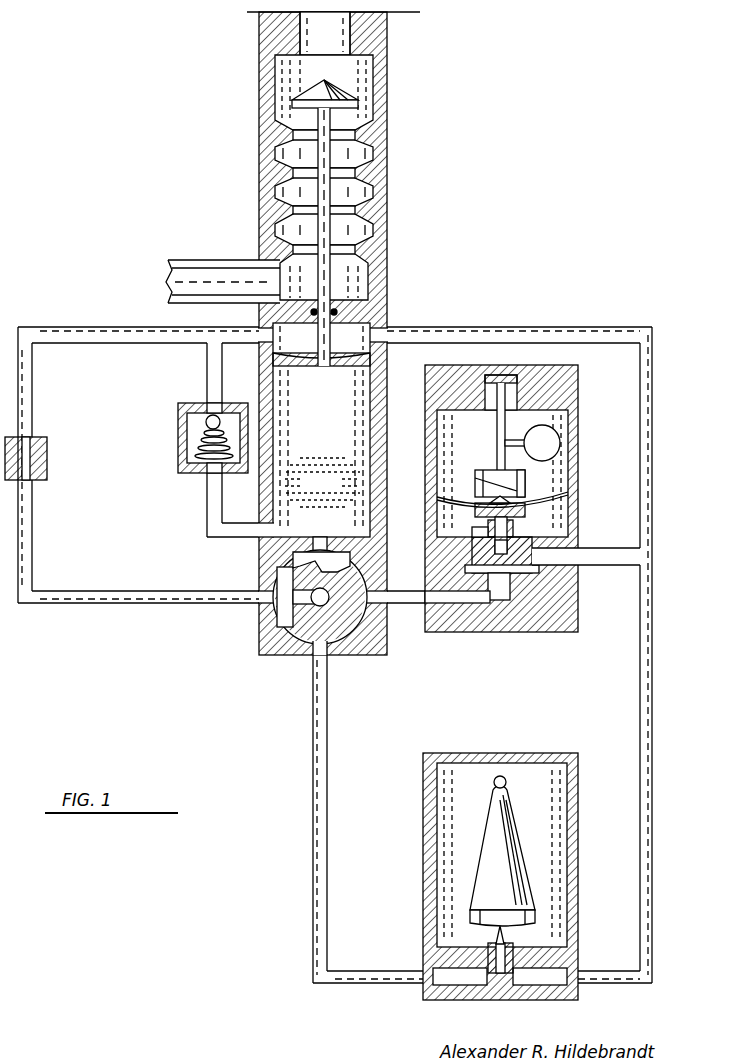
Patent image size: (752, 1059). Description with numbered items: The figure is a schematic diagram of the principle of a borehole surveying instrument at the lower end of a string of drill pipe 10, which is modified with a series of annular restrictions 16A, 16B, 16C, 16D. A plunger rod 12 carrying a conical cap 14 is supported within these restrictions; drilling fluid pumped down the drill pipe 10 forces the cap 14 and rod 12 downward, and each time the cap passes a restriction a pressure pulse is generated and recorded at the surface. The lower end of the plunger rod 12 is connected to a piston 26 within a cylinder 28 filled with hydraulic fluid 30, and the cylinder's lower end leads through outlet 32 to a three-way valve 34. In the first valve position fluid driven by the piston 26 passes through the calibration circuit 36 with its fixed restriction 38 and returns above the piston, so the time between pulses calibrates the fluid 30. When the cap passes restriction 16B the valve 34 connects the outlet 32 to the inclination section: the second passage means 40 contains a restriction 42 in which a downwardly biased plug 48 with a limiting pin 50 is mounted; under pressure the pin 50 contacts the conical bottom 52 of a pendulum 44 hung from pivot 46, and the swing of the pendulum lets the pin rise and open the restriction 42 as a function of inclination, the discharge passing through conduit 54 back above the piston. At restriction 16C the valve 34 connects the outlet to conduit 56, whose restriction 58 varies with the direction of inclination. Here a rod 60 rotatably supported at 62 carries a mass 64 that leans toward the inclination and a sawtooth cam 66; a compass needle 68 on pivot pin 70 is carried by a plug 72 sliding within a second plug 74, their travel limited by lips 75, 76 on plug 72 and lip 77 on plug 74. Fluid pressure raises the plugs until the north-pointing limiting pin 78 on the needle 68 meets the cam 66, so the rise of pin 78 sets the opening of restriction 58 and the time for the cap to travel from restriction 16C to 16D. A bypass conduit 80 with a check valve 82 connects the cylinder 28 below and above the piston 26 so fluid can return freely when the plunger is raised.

The drill pipe 10 is at (388, 55).
The plunger rod 12 is at (330, 290).
The conical cap 14 is at (314, 92).
The annular restriction 16A is at (358, 135).
The annular restriction 16B is at (358, 174).
The annular restriction 16C is at (358, 211).
The annular restriction 16D is at (358, 250).
The piston 26 is at (305, 366).
The cylinder 28 is at (387, 425).
The hydraulic fluid 30 is at (322, 482).
The outlet 32 is at (318, 540).
The three-way valve 34 is at (282, 578).
The circuit 36 is at (184, 591).
The fixed restriction 38 is at (47, 463).
The second passage means 40 is at (330, 762).
The restriction 42 is at (498, 1000).
The pendulum 44 is at (492, 826).
The pivot 46 is at (494, 783).
The plug 48 is at (512, 968).
The limiting pin 50 is at (495, 938).
The bottom 52 is at (522, 922).
The conduit 54 is at (640, 897).
The conduit 56 is at (412, 606).
The restriction 58 is at (533, 556).
The rod 60 is at (497, 422).
The rotatable support 62 is at (512, 378).
The mass 64 is at (553, 452).
The cam 66 is at (497, 472).
The compass needle 68 is at (437, 497).
The pivot pin 70 is at (522, 494).
The plug 72 is at (513, 523).
The second plug 74 is at (513, 534).
The lip 75 is at (484, 518).
The lip 76 is at (472, 556).
The lip 77 is at (470, 540).
The limiting pin 78 is at (480, 497).
The bypass conduit 80 is at (207, 370).
The check valve 82 is at (178, 433).